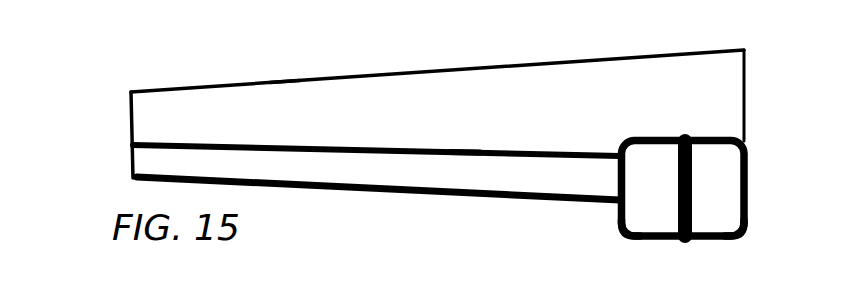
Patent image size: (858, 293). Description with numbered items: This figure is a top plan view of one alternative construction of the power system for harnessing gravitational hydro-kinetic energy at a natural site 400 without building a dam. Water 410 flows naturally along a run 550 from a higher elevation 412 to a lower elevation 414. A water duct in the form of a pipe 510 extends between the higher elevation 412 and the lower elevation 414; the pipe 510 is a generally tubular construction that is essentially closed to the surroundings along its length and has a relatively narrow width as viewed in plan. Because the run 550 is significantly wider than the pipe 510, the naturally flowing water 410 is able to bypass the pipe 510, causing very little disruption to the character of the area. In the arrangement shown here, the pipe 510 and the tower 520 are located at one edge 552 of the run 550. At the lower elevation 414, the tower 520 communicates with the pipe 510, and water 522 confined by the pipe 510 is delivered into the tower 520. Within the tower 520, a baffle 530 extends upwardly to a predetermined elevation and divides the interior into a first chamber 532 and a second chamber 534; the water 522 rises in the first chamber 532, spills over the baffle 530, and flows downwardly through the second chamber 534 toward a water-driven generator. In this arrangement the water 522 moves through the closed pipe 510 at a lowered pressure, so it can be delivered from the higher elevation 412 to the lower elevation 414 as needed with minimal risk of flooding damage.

The site 400 is at (462, 54).
The water 410 is at (476, 127).
The higher elevation 412 is at (131, 145).
The lower elevation 414 is at (745, 115).
The pipe 510 is at (381, 182).
The tower 520 is at (749, 178).
The water 522 is at (546, 190).
The baffle 530 is at (695, 153).
The first chamber 532 is at (633, 218).
The second chamber 534 is at (731, 218).
The run 550 is at (574, 76).
The edge 552 is at (288, 78).